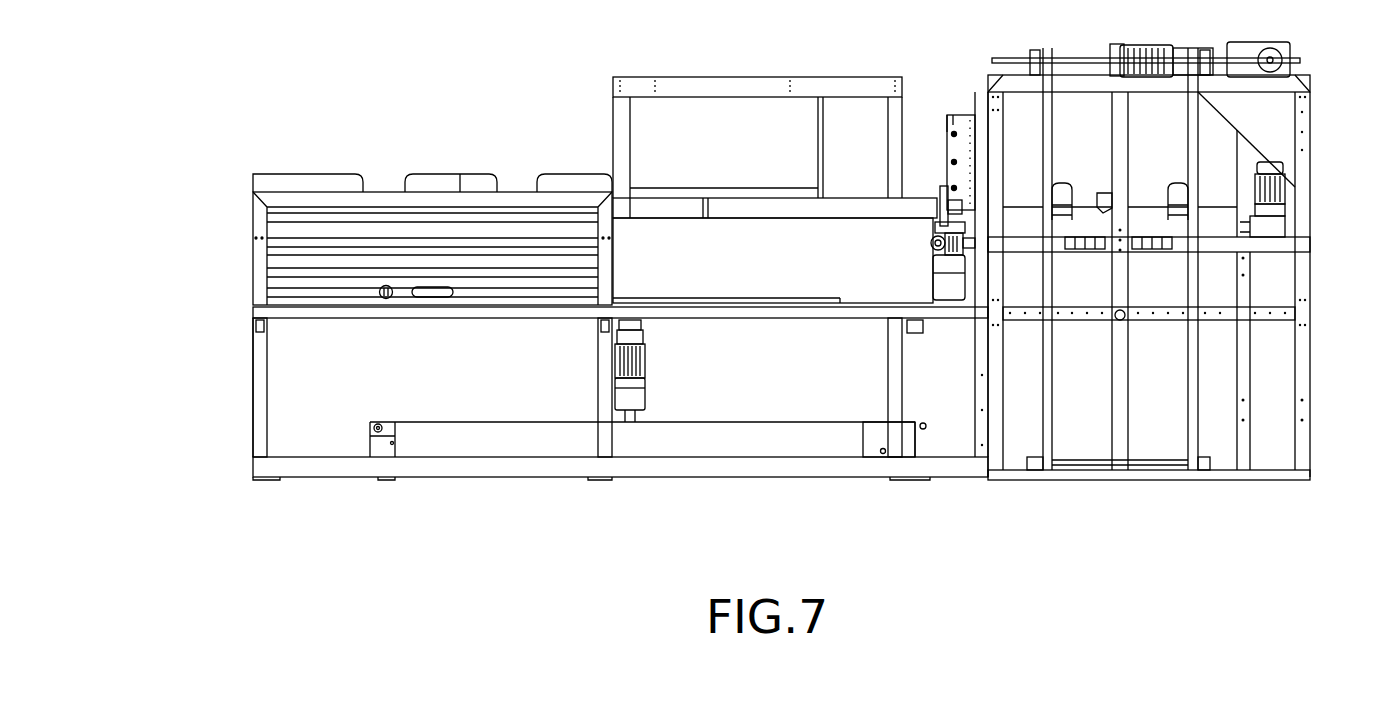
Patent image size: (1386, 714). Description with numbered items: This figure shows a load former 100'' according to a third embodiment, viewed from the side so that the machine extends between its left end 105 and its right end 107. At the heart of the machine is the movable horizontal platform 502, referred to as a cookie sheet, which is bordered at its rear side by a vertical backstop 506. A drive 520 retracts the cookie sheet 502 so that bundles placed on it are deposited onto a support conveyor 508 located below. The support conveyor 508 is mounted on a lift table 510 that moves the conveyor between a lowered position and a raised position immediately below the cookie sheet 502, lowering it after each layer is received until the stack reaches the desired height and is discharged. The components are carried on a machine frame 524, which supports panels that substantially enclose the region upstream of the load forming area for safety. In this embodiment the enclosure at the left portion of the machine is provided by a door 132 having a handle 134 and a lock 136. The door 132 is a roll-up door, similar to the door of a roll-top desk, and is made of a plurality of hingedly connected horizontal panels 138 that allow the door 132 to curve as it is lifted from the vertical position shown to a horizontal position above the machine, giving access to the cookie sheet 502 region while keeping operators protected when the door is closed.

The load former 100'' is at (620, 250).
The left end 105 is at (232, 353).
The right end 107 is at (920, 155).
The door 132 is at (280, 264).
The handle 134 is at (444, 299).
The lock 136 is at (386, 299).
The horizontal panels 138 is at (313, 232).
The horizontal platform 502 is at (795, 299).
The vertical backstop 506 is at (720, 243).
The support conveyor 508 is at (695, 421).
The lift table 510 is at (828, 444).
The drive 520 is at (633, 412).
The machine frame 524 is at (256, 415).